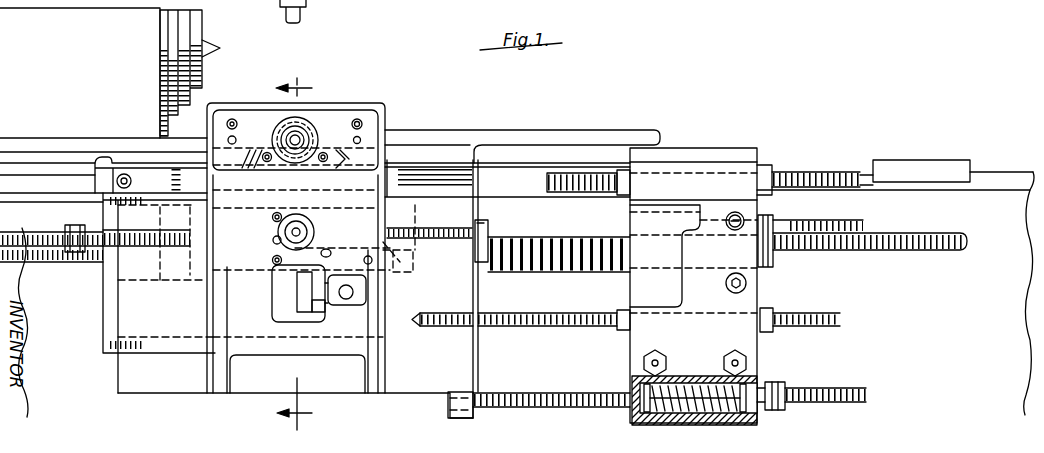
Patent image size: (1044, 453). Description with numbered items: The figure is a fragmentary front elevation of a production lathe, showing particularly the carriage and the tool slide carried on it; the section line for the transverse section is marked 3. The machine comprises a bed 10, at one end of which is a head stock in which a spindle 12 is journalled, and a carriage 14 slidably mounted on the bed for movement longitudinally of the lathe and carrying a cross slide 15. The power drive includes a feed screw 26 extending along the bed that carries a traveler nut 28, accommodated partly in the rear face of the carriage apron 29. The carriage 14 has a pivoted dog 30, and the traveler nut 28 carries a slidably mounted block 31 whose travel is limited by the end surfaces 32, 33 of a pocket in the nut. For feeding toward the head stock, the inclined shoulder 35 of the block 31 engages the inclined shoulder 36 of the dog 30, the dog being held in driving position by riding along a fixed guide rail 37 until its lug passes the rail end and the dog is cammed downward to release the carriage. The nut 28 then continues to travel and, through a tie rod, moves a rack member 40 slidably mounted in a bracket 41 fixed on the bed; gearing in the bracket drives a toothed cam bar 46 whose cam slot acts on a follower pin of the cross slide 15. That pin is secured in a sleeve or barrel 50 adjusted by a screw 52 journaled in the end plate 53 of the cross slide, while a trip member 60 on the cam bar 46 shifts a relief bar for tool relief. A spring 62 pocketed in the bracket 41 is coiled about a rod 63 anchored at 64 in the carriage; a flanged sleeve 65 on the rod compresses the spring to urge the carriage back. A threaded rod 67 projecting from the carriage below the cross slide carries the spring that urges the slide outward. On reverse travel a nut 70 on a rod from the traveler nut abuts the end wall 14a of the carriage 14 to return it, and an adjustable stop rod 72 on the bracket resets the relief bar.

The section line 3- 3 is at (296, 247).
The bed 10 is at (977, 202).
The spindle 12 is at (200, 31).
The carriage 14 is at (462, 367).
The end wall 14a is at (100, 278).
The cross slide 15 is at (350, 104).
The feed screw 26 is at (43, 265).
The traveler nut 28 is at (172, 270).
The carriage apron 29 is at (135, 378).
The pivoted dog 30 is at (305, 292).
The block 31 is at (318, 249).
The end surface 32 is at (413, 256).
The end surface 33 is at (300, 239).
The inclined shoulder 35 is at (340, 272).
The inclined shoulder 36 is at (322, 281).
The guide rail 37 is at (405, 313).
The rack member 40 is at (568, 266).
The bracket 41 is at (745, 290).
The cam bar 46 is at (427, 177).
The sleeve or barrel 50 is at (301, 119).
The screw 52 is at (301, 14).
The end plate 53 is at (372, 113).
The trip member 60 is at (112, 173).
The spring 62 is at (633, 416).
The rod 63 is at (553, 392).
The anchorage 64 is at (448, 403).
The flanged sleeve 65 is at (760, 390).
The threaded rod 67 is at (292, 232).
The nut 70 is at (82, 225).
The adjustable stop rod 72 is at (540, 182).